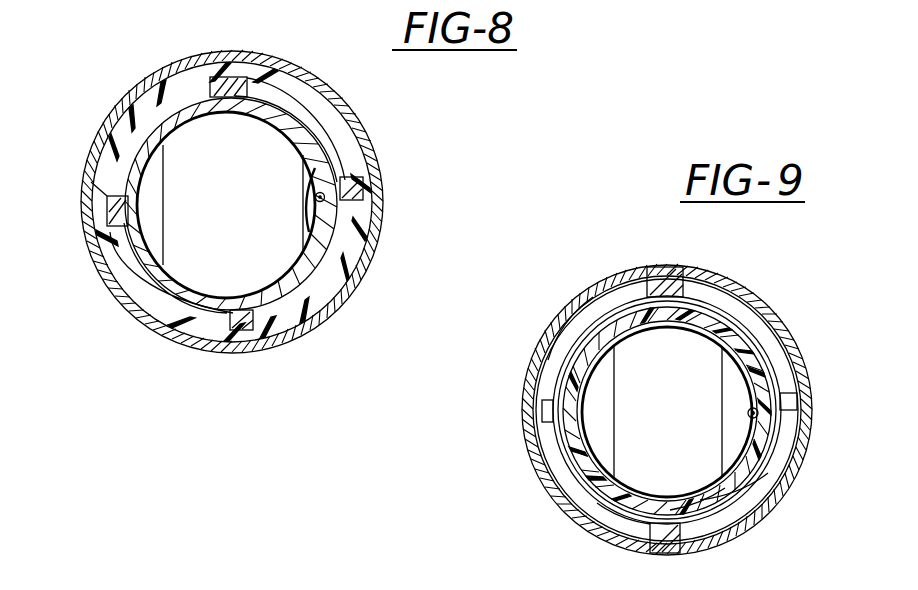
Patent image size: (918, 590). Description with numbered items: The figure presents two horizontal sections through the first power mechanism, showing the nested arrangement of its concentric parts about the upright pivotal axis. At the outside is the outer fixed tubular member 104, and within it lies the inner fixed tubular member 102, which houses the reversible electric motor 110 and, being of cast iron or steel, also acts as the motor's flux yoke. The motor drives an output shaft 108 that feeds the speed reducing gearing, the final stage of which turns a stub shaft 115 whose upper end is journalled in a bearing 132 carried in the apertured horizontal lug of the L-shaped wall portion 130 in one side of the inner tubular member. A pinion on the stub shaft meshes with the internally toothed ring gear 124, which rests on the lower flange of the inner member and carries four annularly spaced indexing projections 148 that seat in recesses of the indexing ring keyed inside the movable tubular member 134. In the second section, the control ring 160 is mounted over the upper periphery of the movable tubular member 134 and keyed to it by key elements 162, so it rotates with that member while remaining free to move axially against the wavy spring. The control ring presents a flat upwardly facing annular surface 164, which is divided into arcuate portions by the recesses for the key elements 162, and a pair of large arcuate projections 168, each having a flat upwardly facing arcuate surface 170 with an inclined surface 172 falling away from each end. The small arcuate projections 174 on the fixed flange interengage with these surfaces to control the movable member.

In FIG. 8, the inner fixed tubular member 102 is at (132, 283).
In FIG. 9, the inner fixed tubular member 102 is at (597, 503).
In FIG. 8, the outer fixed tubular member 104 is at (118, 112).
In FIG. 9, the outer fixed tubular member 104 is at (565, 313).
In FIG. 9, the output shaft 108 is at (593, 297).
In FIG. 8, the reversible electric motor 110 is at (248, 198).
In FIG. 9, the reversible electric motor 110 is at (679, 410).
In FIG. 8, the stub shaft 115 is at (333, 193).
In FIG. 9, the stub shaft 115 is at (760, 408).
In FIG. 8, the ring gear 124 is at (170, 77).
In FIG. 8, the L-shaped wall portion 130 is at (318, 165).
In FIG. 9, the L-shaped wall portion 130 is at (737, 353).
In FIG. 8, the bearing 132 is at (345, 227).
In FIG. 9, the bearing 132 is at (773, 427).
In FIG. 8, the movable tubular member 134 is at (320, 330).
In FIG. 9, the movable tubular member 134 is at (725, 488).
In FIG. 8, the indexing projections 148 is at (260, 72).
In FIG. 9, the control ring 160 is at (720, 302).
In FIG. 9, the key elements 162 is at (635, 285).
In FIG. 9, the annular surface 164 is at (740, 327).
In FIG. 9, the arcuate projections 168 is at (768, 473).
In FIG. 9, the arcuate surface 170 is at (565, 342).
In FIG. 9, the inclined surface 172 is at (543, 413).
In FIG. 9, the arcuate projections 174 is at (673, 287).